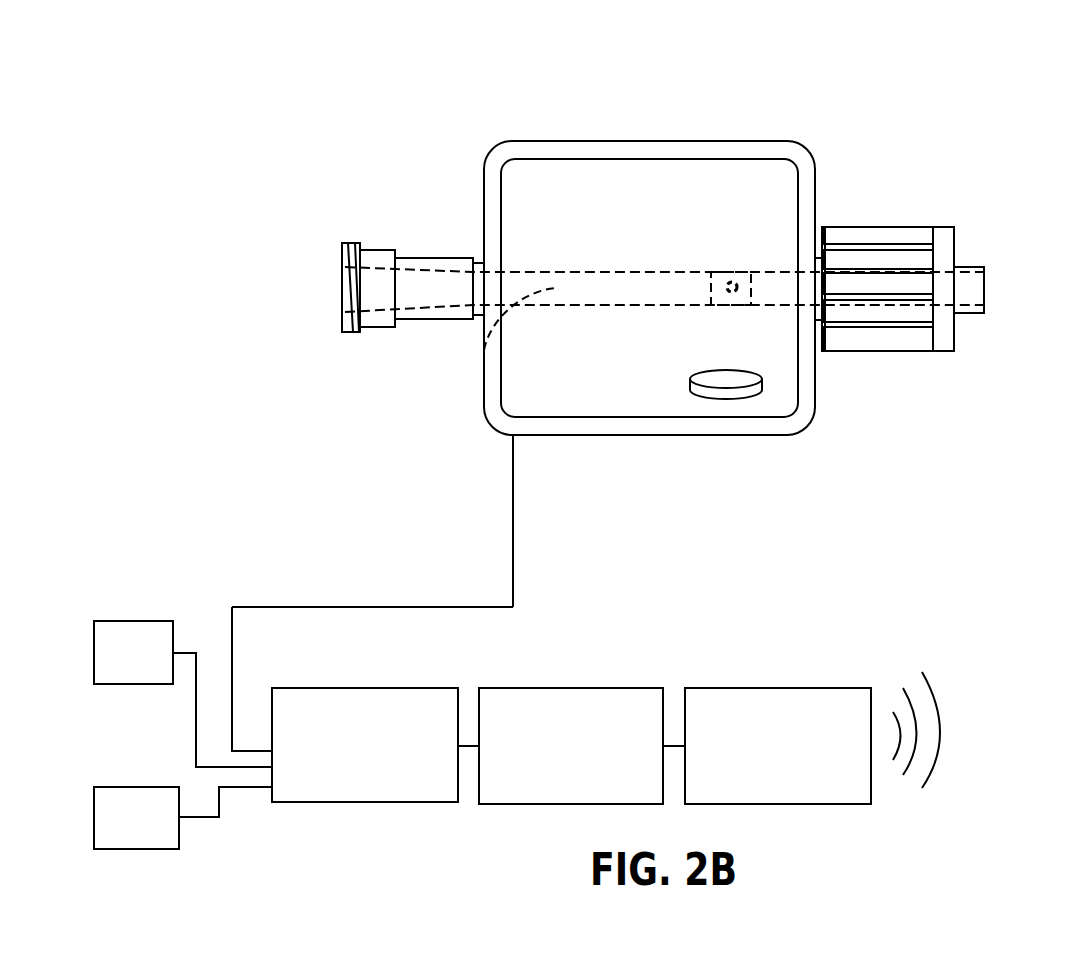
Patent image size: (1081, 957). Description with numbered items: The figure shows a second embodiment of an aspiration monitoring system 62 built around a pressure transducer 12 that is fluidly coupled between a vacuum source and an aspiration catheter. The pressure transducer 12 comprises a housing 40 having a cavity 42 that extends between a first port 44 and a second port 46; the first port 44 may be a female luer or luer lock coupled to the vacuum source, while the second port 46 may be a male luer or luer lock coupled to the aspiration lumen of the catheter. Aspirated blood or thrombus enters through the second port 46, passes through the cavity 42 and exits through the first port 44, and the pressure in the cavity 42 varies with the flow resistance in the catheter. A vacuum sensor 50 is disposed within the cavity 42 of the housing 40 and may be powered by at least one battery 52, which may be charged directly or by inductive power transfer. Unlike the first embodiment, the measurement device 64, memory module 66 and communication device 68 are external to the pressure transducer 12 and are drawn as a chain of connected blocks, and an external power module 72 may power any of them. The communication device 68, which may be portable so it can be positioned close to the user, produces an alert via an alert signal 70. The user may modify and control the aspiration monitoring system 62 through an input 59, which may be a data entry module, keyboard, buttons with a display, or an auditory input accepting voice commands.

The pressure transducer 12 is at (720, 141).
The housing 40 is at (675, 436).
The cavity 42 is at (484, 350).
The first port 44 is at (345, 333).
The second port 46 is at (968, 313).
The vacuum sensor 50 is at (738, 292).
The battery 52 is at (733, 379).
The input 59 is at (152, 620).
The aspiration monitoring system 62 is at (447, 90).
The measurement device 64 is at (325, 688).
The memory module 66 is at (532, 688).
The communication device 68 is at (738, 688).
The alert signal 70 is at (953, 734).
The power module 72 is at (160, 787).